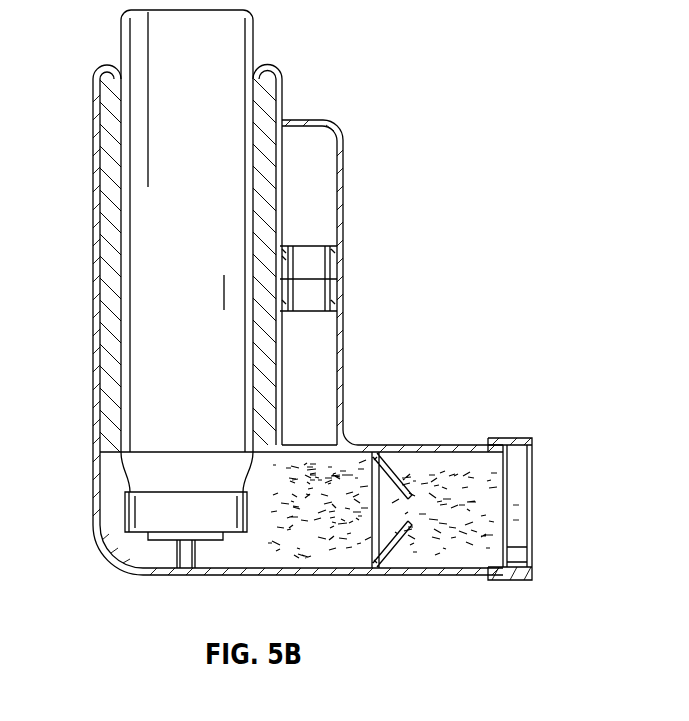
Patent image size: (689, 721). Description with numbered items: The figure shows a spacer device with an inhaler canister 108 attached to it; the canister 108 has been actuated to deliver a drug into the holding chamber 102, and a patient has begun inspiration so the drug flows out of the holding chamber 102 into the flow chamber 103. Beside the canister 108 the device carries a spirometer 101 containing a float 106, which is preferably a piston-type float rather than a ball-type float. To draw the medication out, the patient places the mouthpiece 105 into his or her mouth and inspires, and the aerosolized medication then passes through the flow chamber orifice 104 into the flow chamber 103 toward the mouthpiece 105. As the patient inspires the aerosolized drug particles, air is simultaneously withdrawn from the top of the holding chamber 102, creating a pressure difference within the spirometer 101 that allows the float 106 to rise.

The spirometer 101 is at (307, 138).
The holding chamber 102 is at (227, 550).
The flow chamber 103 is at (432, 468).
The flow chamber orifice 104 is at (375, 545).
The mouthpiece 105 is at (510, 438).
The float 106 is at (307, 263).
The inhaler canister 108 is at (240, 30).